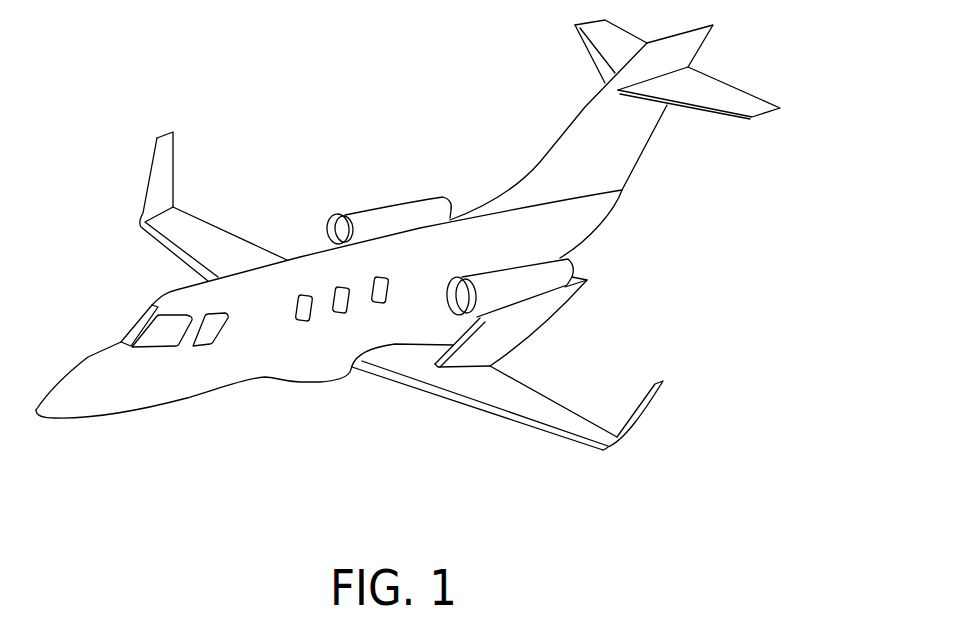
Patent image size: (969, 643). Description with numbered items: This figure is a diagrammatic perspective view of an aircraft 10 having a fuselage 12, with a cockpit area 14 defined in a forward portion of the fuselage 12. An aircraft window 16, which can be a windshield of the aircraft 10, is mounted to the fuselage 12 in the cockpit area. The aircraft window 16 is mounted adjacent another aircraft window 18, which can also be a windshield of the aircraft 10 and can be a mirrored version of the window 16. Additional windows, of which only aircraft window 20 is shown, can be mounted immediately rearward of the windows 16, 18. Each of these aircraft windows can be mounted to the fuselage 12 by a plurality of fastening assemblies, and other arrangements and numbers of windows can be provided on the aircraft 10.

The aircraft 10 is at (655, 227).
The fuselage 12 is at (278, 340).
The cockpit area 14 is at (123, 437).
The aircraft window 16 is at (173, 313).
The aircraft window 18 is at (129, 317).
The aircraft window 20 is at (200, 345).